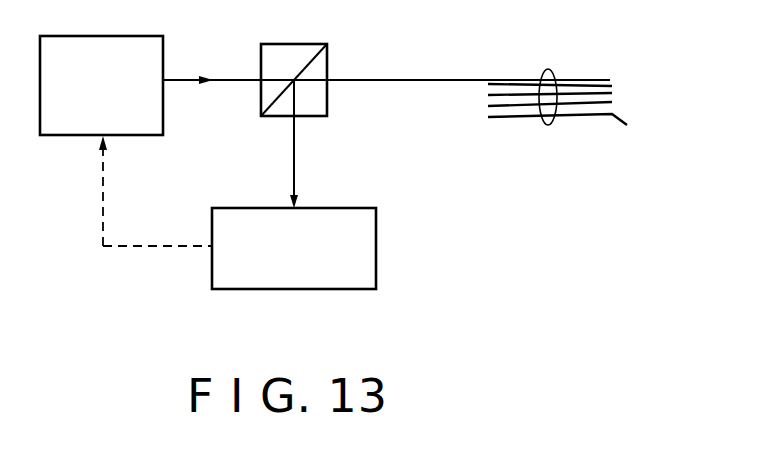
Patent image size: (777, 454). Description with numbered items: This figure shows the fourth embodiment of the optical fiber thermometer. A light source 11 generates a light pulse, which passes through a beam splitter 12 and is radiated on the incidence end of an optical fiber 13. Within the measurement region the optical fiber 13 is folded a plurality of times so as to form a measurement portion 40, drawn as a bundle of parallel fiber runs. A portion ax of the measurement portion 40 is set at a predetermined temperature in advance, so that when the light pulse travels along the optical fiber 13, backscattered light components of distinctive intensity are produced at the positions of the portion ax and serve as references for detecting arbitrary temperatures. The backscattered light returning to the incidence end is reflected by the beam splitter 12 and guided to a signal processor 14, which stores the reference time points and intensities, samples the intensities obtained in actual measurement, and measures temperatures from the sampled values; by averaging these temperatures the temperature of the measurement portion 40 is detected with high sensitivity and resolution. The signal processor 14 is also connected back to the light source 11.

The light source 11 is at (163, 50).
The beam splitter 12 is at (327, 47).
The optical fiber 13 is at (437, 79).
The signal processor 14 is at (376, 250).
The measurement portion 40 is at (616, 72).
The portion ax is at (549, 69).